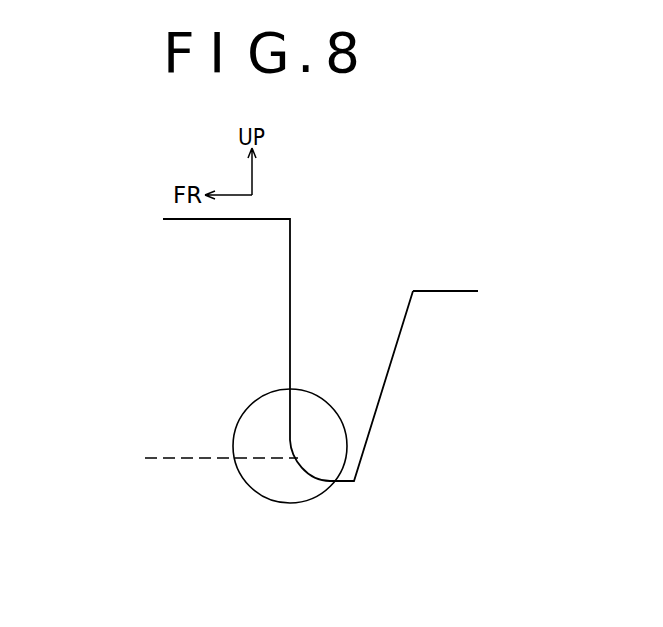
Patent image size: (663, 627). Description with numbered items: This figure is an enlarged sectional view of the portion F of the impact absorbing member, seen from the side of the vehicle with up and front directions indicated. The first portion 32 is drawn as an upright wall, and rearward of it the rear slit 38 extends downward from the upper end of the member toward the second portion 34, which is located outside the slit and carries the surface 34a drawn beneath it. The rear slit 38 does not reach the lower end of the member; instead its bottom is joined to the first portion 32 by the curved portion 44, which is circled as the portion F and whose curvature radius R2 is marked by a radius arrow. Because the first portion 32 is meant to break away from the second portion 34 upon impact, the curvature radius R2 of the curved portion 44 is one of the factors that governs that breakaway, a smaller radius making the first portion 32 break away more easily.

The first portion 32 is at (262, 293).
The second portion 34 is at (460, 304).
The lower surface of upper member 34a is at (247, 503).
The rear slit 38 is at (349, 395).
The curved portion 44 is at (306, 468).
The portion F is at (318, 395).
The curvature radius R2 is at (338, 422).